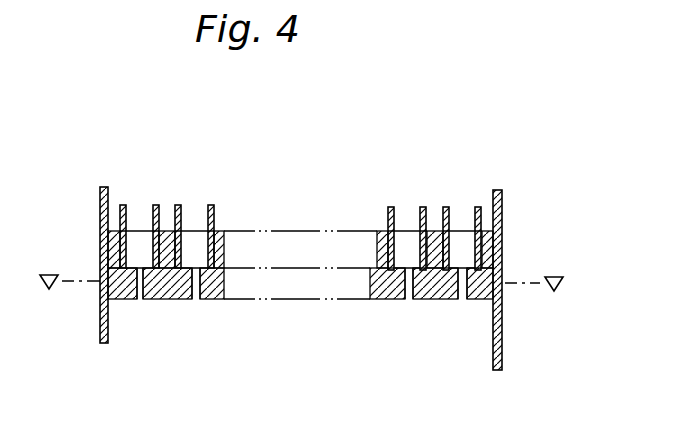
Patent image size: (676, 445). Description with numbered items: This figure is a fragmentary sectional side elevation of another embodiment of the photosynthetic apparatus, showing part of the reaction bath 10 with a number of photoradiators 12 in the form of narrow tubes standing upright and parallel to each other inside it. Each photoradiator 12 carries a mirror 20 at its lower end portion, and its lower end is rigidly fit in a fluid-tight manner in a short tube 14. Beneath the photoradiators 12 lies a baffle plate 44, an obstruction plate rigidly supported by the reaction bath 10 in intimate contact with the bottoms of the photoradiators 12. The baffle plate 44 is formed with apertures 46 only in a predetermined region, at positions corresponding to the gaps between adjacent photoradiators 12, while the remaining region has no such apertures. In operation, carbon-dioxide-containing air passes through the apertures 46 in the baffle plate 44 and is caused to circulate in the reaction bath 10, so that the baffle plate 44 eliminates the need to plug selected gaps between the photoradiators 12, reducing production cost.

The reaction bath 10 is at (503, 197).
The photoradiator 12 is at (128, 207).
The short tube 14 is at (488, 247).
The mirror 20 is at (142, 228).
The baffle plate 44 is at (224, 300).
The apertures 46 is at (141, 300).